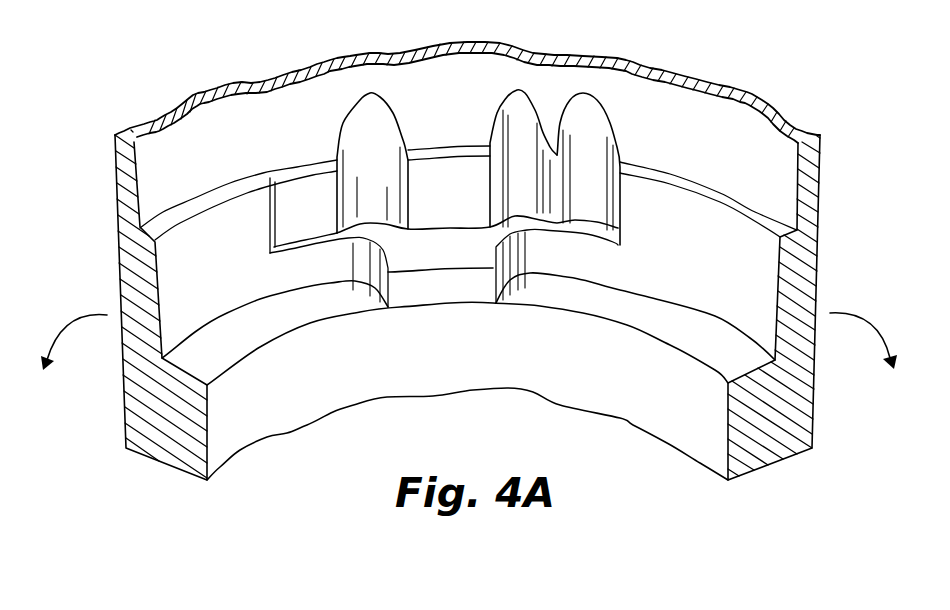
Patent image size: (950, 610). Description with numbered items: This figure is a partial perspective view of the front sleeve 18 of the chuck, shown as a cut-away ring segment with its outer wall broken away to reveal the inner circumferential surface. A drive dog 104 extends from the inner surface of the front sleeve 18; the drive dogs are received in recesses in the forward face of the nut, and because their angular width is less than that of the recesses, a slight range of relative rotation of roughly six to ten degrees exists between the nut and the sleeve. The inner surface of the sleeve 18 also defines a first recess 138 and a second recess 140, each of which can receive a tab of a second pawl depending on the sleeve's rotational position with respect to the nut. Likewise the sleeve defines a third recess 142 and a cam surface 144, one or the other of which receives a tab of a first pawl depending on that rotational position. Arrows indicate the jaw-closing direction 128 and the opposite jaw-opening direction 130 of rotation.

The front sleeve 18 is at (699, 80).
The drive dog 104 is at (442, 287).
The jaw-closing direction 128 is at (68, 326).
The jaw-opening direction 130 is at (869, 326).
The first recess 138 is at (513, 131).
The second recess 140 is at (590, 190).
The third recess 142 is at (370, 143).
The cam surface 144 is at (297, 197).